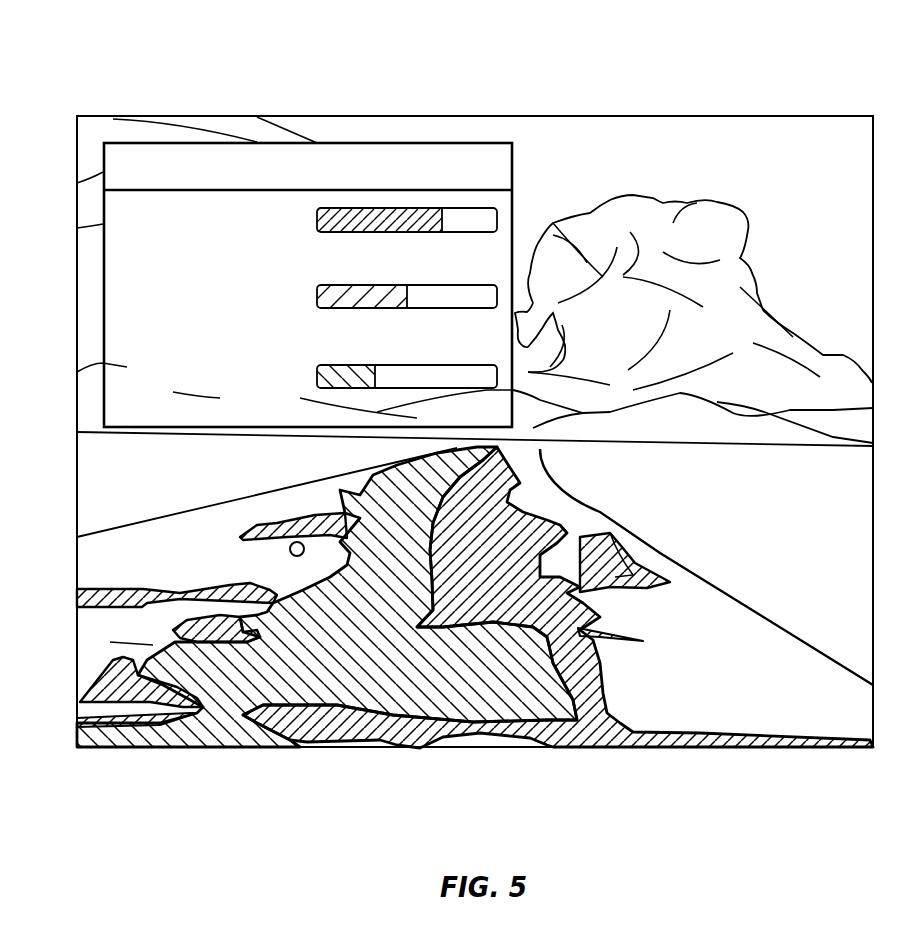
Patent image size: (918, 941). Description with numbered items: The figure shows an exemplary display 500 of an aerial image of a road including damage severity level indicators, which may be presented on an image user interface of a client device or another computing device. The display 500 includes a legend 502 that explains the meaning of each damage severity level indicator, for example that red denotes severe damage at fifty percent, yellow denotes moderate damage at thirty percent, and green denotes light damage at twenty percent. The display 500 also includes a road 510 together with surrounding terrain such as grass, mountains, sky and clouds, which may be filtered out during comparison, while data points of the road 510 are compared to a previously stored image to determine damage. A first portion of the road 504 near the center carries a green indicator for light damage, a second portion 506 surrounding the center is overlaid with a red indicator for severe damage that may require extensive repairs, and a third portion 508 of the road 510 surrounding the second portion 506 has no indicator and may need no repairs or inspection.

The display 500 is at (585, 70).
The legend 502 is at (103, 277).
The first portion of the road 504 is at (230, 730).
The second portion 506 is at (585, 730).
The third portion 508 is at (718, 713).
The road 510 is at (103, 557).